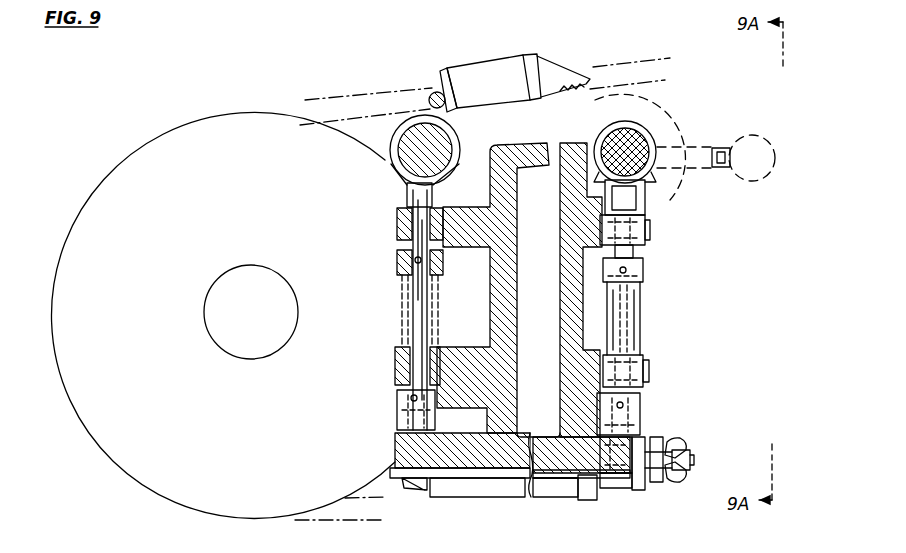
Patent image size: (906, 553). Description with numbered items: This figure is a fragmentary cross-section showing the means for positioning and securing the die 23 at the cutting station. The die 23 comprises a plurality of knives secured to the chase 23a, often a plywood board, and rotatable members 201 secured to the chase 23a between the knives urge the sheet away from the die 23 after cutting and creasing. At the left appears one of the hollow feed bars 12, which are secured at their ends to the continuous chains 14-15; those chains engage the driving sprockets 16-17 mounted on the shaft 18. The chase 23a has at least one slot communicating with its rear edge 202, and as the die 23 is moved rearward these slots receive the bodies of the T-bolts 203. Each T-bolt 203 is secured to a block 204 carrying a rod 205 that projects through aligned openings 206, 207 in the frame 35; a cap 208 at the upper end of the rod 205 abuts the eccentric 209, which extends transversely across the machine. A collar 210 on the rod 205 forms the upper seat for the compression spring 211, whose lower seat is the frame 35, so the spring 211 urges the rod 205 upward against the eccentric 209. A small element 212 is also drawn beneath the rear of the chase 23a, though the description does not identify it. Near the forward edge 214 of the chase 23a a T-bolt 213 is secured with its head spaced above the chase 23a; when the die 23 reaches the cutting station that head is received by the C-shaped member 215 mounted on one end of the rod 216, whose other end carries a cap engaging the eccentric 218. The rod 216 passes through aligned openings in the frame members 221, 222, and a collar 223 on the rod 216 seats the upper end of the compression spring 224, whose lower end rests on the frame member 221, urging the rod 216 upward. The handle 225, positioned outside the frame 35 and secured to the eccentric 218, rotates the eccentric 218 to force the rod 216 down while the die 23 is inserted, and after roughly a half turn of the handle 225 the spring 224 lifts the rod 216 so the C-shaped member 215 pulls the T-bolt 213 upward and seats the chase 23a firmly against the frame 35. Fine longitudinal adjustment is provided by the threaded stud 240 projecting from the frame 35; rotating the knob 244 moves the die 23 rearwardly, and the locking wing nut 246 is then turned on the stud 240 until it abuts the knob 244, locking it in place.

The feed bar 12 is at (498, 56).
The continuous chains 14-15 is at (433, 70).
The driving sprockets 16-17 is at (168, 124).
The shaft 18 is at (264, 324).
The die 23 is at (582, 500).
The chase 23a is at (558, 478).
The frame 35 is at (513, 370).
The rotatable members 201 is at (478, 497).
The rear edge 202 is at (395, 464).
The T-bolt 203 is at (395, 447).
The block 204 is at (397, 405).
The rod 205 is at (415, 245).
The opening 206 is at (396, 371).
The opening 207 is at (410, 223).
The cap 208 is at (405, 190).
The eccentric 209 is at (415, 150).
The collar 210 is at (398, 268).
The compression spring 211 is at (400, 302).
The stop 212 is at (416, 491).
The T-bolt 213 is at (620, 437).
The forward edge 214 is at (625, 472).
The C-shaped member 215 is at (643, 400).
The rod 216 is at (632, 255).
The eccentric 218 is at (652, 135).
The frame member 221 is at (642, 360).
The frame member 222 is at (648, 228).
The collar 223 is at (646, 270).
The compression spring 224 is at (640, 327).
The handle 225 is at (707, 147).
The threaded stud 240 is at (694, 460).
The knob 244 is at (657, 444).
The locking wing nut 246 is at (682, 446).